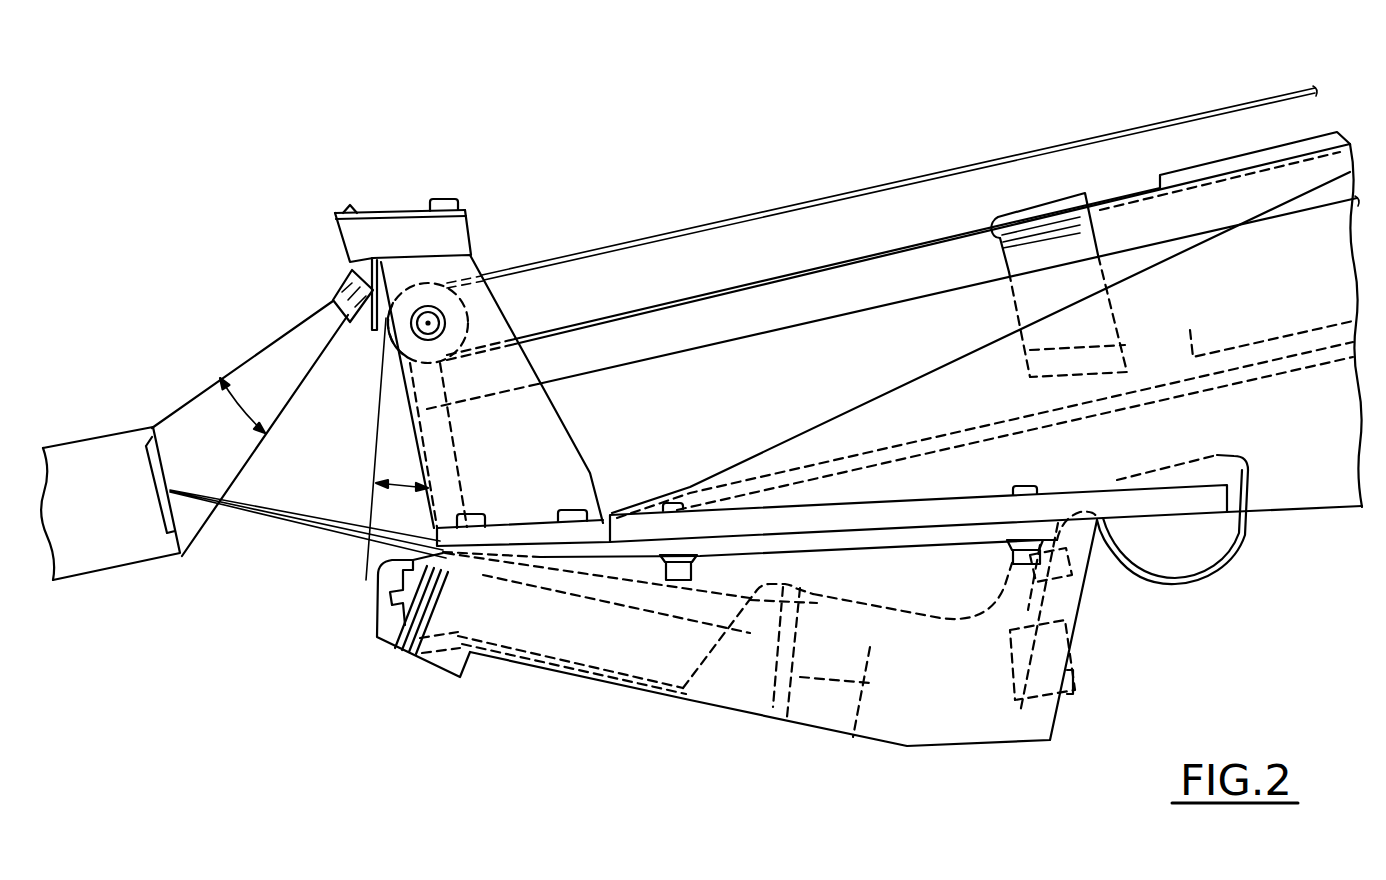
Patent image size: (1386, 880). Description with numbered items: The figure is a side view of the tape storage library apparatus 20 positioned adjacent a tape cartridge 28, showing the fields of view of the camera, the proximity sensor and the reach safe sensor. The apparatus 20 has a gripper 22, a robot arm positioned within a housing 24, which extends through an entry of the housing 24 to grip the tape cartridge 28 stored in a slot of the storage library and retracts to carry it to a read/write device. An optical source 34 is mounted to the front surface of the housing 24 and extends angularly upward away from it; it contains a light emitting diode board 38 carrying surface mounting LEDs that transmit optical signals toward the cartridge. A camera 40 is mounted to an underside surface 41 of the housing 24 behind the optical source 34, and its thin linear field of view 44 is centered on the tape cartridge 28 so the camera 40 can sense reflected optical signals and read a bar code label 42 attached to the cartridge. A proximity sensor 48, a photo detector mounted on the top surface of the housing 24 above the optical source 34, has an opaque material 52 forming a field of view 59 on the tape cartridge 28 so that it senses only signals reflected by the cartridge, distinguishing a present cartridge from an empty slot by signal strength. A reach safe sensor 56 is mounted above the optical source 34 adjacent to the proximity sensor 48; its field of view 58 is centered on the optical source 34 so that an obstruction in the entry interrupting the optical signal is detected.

The tape storage library apparatus 20 is at (864, 91).
The gripper 22 is at (1006, 208).
The housing 24 is at (1110, 400).
The tape cartridge 28 is at (77, 451).
The optical source 34 is at (377, 607).
The light emitting diode (LED) board 38 is at (427, 600).
The camera 40 is at (850, 663).
The underside surface 41 is at (800, 560).
The label 42 is at (150, 450).
The field of view 44 is at (643, 585).
The proximity sensor 48 is at (390, 258).
The opaque material 52 is at (338, 287).
The reach safe sensor 56 is at (373, 318).
The field of view 58 is at (398, 480).
The field of view 59 is at (252, 378).